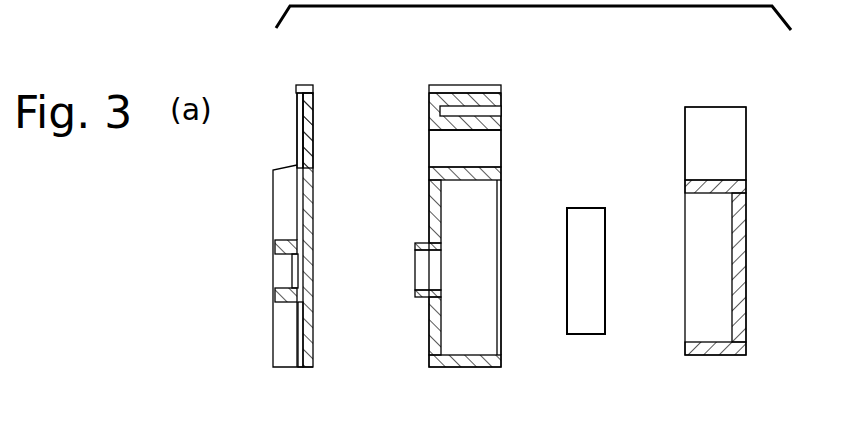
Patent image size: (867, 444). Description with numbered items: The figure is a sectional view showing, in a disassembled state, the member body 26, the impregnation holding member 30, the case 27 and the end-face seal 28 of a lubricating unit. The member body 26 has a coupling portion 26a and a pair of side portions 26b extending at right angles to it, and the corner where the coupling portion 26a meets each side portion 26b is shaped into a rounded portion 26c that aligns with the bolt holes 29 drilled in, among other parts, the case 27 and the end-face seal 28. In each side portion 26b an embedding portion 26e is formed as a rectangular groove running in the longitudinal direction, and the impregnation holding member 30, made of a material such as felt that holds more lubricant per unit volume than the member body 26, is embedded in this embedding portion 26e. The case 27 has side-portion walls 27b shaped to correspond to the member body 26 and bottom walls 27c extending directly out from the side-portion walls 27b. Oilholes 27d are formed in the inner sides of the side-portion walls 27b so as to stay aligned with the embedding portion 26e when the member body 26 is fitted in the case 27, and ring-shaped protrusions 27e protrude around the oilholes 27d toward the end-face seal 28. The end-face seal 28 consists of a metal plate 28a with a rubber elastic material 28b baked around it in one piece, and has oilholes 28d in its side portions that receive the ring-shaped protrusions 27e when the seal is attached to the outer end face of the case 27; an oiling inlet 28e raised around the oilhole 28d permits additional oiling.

The member body 26 is at (748, 107).
The coupling portion 26a is at (703, 107).
The side portion 26b is at (686, 316).
The rounded portion 26c is at (692, 151).
The embedding portion 26e is at (692, 251).
The case 27 is at (488, 85).
The side-portion wall 27b is at (502, 272).
The bottom wall 27c is at (474, 362).
The oilhole 27d is at (420, 268).
The ring-shaped protrusion 27e is at (421, 297).
The end-face seal 28 is at (311, 85).
The metal plate 28a is at (314, 121).
The elastic material 28b is at (298, 335).
The oilhole 28d is at (315, 266).
The oiling inlet 28e is at (282, 275).
The bolt hole 29 is at (314, 152).
The impregnation holding member 30 is at (583, 335).